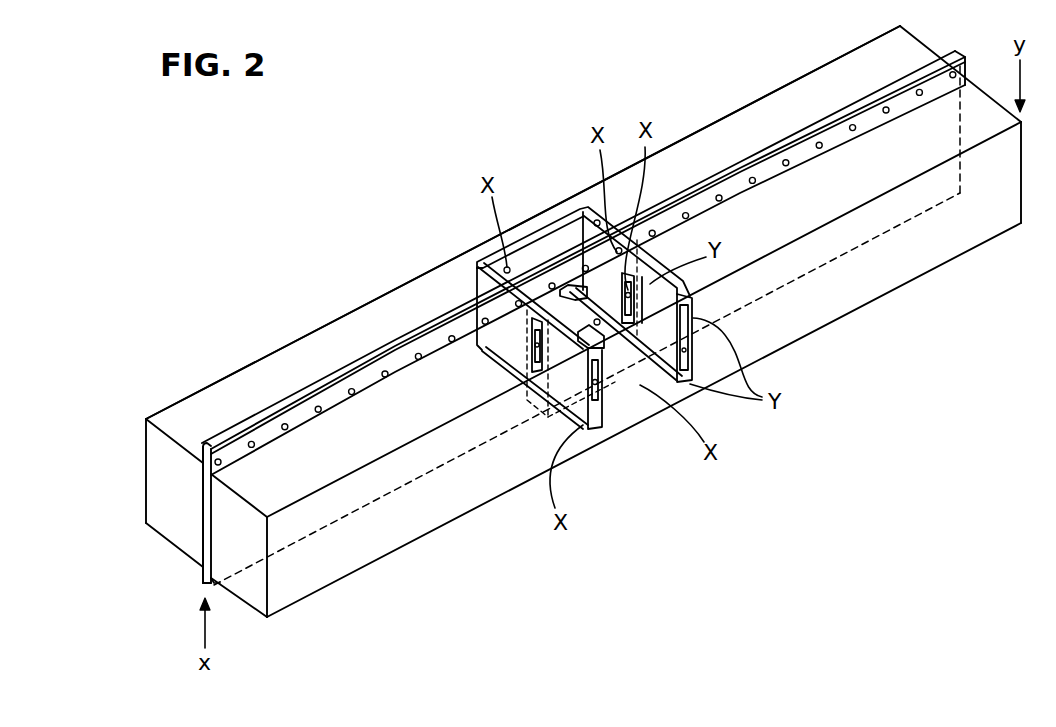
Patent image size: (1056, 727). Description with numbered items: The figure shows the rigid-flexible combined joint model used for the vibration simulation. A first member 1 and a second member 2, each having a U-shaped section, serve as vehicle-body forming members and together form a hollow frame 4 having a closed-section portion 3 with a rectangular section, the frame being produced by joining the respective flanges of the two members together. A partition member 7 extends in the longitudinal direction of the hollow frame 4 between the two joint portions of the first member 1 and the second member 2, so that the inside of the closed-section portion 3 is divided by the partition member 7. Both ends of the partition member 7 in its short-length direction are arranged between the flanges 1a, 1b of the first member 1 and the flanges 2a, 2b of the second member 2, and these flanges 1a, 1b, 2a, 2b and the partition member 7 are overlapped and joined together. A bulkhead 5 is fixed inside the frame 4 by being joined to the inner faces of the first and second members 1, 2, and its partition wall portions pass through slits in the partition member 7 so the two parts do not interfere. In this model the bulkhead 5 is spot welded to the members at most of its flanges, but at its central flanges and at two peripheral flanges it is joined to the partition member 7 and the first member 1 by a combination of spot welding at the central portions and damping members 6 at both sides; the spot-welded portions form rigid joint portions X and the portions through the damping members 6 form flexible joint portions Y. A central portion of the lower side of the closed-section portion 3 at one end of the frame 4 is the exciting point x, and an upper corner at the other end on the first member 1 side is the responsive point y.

The first member 1 is at (408, 520).
The flange of first member 1a is at (305, 421).
The flange of first member 1b is at (214, 582).
The second member 2 is at (317, 352).
The flange of second member 2a is at (272, 407).
The flange of second member 2b is at (203, 578).
The closed-section portion 3 is at (184, 531).
The hollow frame 4 is at (406, 244).
The bulkhead 5 is at (548, 216).
The damping member 6 is at (530, 335).
The partition member 7 is at (203, 505).